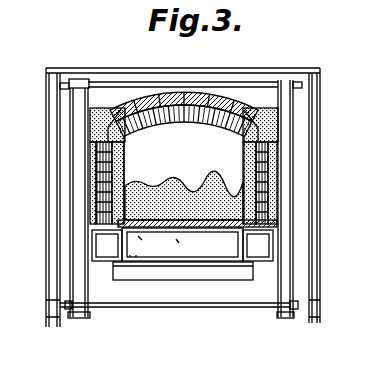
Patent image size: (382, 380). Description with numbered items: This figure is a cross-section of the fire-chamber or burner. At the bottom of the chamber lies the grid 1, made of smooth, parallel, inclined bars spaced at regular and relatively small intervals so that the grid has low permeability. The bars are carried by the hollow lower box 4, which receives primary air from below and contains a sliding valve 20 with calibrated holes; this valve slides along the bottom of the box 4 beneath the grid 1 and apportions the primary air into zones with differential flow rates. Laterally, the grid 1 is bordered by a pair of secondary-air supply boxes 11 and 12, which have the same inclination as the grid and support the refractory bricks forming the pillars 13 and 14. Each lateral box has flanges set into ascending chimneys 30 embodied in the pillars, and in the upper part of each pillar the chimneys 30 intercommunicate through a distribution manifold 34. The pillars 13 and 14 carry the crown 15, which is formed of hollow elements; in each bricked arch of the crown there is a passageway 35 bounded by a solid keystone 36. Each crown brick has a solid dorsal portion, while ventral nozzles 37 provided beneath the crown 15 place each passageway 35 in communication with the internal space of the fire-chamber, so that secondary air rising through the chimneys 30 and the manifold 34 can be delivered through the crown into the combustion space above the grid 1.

The grid 1 is at (157, 183).
The lower box 4 is at (207, 263).
The secondary-air supply box 11 is at (263, 243).
The secondary-air supply box 12 is at (103, 248).
The pillar 13 is at (251, 183).
The pillar 14 is at (93, 181).
The crown 15 is at (233, 100).
The sliding valve 20 is at (168, 252).
The ascending chimney 30 is at (268, 227).
The distribution manifold 34 is at (261, 147).
The passageway 35 is at (268, 117).
The solid keystone 36 is at (181, 93).
The ventral nozzle 37 is at (200, 119).